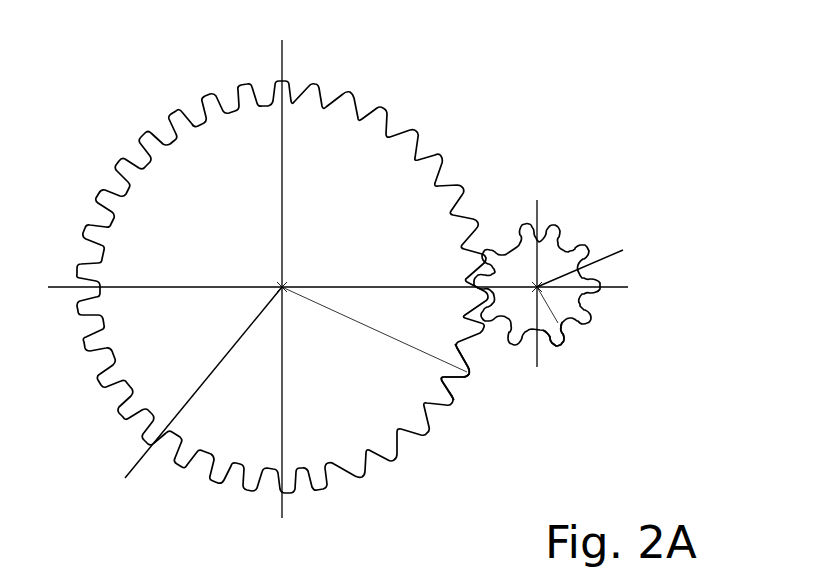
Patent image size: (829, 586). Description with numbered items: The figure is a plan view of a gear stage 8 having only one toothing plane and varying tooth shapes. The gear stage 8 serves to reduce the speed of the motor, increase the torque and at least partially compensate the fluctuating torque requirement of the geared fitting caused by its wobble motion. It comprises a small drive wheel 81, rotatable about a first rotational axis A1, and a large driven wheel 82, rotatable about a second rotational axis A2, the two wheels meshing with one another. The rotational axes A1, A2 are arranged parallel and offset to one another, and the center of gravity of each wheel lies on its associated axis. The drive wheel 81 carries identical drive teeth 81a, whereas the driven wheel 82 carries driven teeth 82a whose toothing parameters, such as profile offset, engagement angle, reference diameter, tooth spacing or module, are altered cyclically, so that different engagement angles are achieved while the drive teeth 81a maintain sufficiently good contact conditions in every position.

The gear stage 8 is at (160, 88).
The driven wheel 82 is at (422, 135).
The driven teeth 82a is at (450, 397).
The drive wheel 81 is at (563, 215).
The drive teeth 81a is at (551, 336).
The first rotational axis A1 is at (596, 261).
The second rotational axis A2 is at (193, 402).